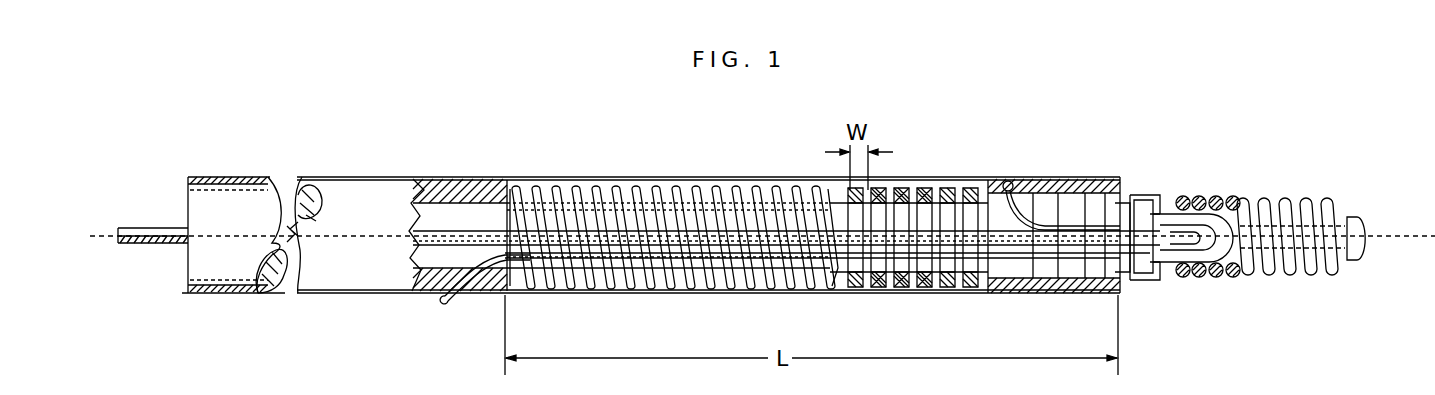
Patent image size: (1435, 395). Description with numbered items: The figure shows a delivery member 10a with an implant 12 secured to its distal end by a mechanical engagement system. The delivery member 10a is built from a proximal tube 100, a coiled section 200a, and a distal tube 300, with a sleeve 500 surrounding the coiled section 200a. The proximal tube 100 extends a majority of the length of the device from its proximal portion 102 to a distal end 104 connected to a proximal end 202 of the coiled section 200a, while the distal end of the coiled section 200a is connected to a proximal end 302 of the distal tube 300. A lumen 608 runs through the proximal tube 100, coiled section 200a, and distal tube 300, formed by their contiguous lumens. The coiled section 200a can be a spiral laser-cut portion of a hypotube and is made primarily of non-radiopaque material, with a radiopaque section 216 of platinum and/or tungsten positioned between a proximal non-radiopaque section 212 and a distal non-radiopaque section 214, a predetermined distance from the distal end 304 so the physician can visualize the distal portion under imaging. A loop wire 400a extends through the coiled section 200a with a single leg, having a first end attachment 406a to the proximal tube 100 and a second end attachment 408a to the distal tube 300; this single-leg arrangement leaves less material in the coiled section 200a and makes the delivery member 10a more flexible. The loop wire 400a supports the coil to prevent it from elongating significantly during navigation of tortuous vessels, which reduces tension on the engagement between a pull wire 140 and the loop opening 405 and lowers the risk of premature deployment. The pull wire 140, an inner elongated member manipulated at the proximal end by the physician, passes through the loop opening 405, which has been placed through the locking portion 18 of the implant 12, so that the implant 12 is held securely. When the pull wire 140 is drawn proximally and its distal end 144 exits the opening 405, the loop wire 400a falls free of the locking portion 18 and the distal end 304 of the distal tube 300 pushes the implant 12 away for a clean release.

The proximal tube 100 is at (342, 175).
The housing end portion 102 is at (188, 193).
The distal end of the proximal tube 104 is at (520, 292).
The pull wire 140 is at (150, 248).
The proximal end of the coiled section 202 is at (490, 186).
The proximal non-radiopaque section of the coil 212 is at (508, 190).
The sleeve 500 is at (727, 180).
The delivery member 10a is at (777, 177).
The coiled section 200a is at (643, 292).
The first end attachment 406a is at (465, 287).
The distal non-radiopaque section of the coil 214 is at (970, 178).
The radiopaque section 216 is at (912, 290).
The loop wire 400a is at (850, 285).
The second end attachment 408a is at (1008, 180).
The distal tube 300 is at (1062, 179).
The proximal end of the distal tube 302 is at (983, 262).
The lumen 608 is at (1085, 195).
The distal end of the distal tube 304 is at (1131, 198).
The loop opening 405 is at (1140, 282).
The locking portion 18 is at (1166, 214).
The distal end of the pull wire 144 is at (1198, 226).
The implant 12 is at (1312, 198).